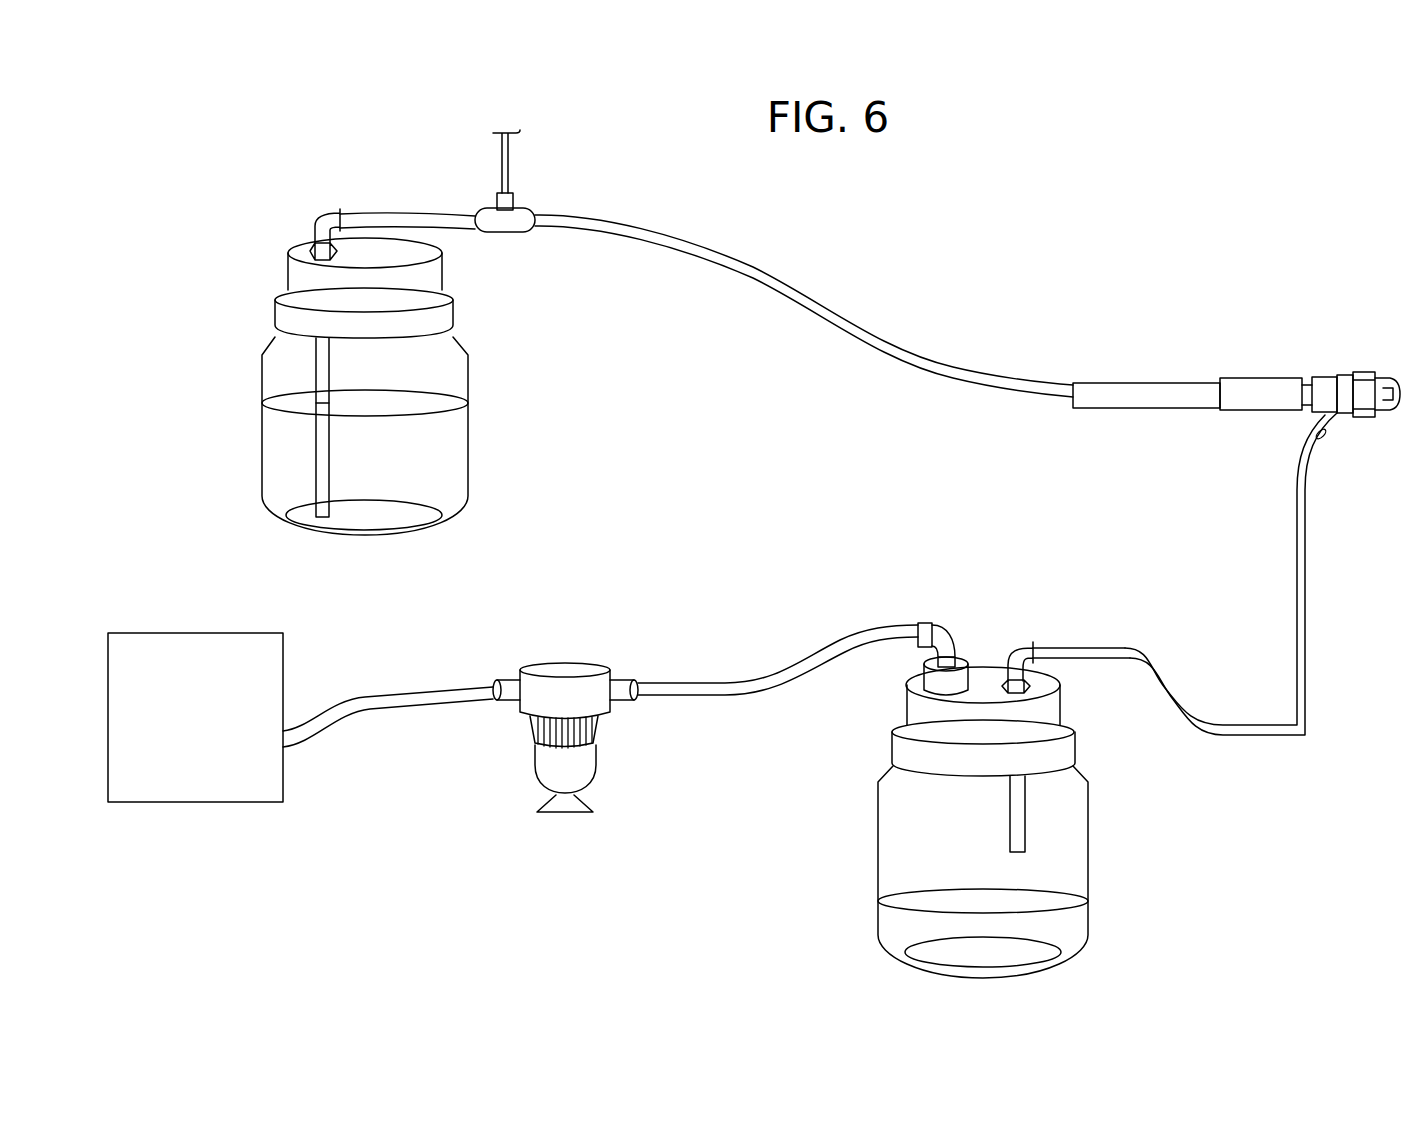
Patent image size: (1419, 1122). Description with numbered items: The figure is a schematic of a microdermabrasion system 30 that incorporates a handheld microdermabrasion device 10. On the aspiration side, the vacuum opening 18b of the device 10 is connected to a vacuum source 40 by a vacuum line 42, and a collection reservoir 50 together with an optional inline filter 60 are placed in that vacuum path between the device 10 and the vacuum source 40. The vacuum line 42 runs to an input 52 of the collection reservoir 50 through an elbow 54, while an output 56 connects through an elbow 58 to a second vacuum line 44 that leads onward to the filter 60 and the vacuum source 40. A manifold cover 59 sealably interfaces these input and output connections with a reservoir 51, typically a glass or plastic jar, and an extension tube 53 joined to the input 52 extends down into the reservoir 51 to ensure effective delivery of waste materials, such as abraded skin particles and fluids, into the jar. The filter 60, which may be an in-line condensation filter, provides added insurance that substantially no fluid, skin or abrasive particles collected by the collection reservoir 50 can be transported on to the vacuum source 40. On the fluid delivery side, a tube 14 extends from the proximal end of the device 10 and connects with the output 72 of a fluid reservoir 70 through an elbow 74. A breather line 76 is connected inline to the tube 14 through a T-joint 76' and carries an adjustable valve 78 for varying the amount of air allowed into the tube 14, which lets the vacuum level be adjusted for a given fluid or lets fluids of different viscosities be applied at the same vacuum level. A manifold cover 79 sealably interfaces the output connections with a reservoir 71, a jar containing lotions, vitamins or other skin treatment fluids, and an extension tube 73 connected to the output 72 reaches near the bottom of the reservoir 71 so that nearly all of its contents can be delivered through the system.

The microdermabrasion system 30 is at (1005, 165).
The microdermabrasion device 10 is at (1289, 349).
The tube 14 is at (843, 327).
The vacuum opening 18b is at (1340, 424).
The vacuum line 42 is at (1307, 570).
The vacuum source 40 is at (213, 633).
The second vacuum line 44 is at (702, 683).
The inline filter 60 is at (559, 642).
The collection reservoir 50 is at (1148, 833).
The reservoir 51 is at (878, 872).
The input 52 is at (1035, 650).
The extension tube 53 is at (1027, 827).
The elbow 54 is at (1013, 657).
The output 56 is at (917, 625).
The elbow 58 is at (940, 637).
The manifold cover 59 is at (892, 745).
The fluid reservoir 70 is at (203, 398).
The reservoir 71 is at (262, 457).
The output 72 is at (342, 217).
The extension tube 73 is at (320, 381).
The elbow 74 is at (322, 214).
The breather line 76 is at (537, 160).
The T-joint 76' is at (554, 270).
The adjustable valve 78 is at (496, 200).
The manifold cover 79 is at (288, 279).